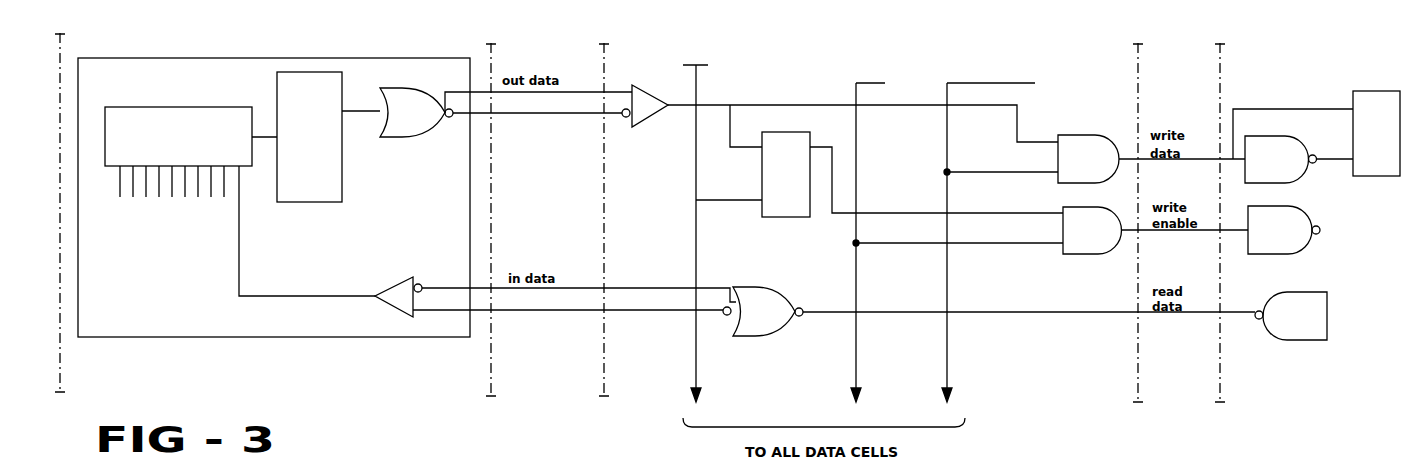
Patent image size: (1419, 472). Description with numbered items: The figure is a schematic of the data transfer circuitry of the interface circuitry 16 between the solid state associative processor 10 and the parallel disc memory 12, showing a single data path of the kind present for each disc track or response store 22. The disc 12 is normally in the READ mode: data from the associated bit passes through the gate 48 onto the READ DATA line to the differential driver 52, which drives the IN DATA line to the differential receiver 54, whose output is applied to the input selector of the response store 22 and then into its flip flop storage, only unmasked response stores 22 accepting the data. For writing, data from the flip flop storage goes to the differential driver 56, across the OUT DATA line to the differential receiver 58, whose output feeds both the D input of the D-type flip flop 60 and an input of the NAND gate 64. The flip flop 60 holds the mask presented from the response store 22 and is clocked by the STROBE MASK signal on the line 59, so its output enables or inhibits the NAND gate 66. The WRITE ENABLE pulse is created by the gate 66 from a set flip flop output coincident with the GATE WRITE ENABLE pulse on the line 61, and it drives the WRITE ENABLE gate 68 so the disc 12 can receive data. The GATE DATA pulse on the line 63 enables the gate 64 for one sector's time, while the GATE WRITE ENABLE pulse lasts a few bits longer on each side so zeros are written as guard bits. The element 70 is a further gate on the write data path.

The solid state associative processor 10 is at (491, 355).
The parallel disc memory 12 is at (1217, 378).
The interface circuitry 16 is at (604, 357).
The response store 22 is at (342, 337).
The gate 48 is at (1291, 316).
The differential driver 52 is at (989, 311).
The differential receiver 54 is at (402, 284).
The differential driver 56 is at (506, 112).
The differential receiver 58 is at (642, 122).
The line 59 is at (696, 172).
The D-type flip flop 60 is at (775, 217).
The line 61 is at (856, 182).
The line 63 is at (947, 175).
The NAND gate 64 is at (1151, 159).
The NAND gate 66 is at (1155, 230).
The WRITE ENABLE gate 68 is at (1284, 230).
The NAND gate 70 is at (1316, 137).